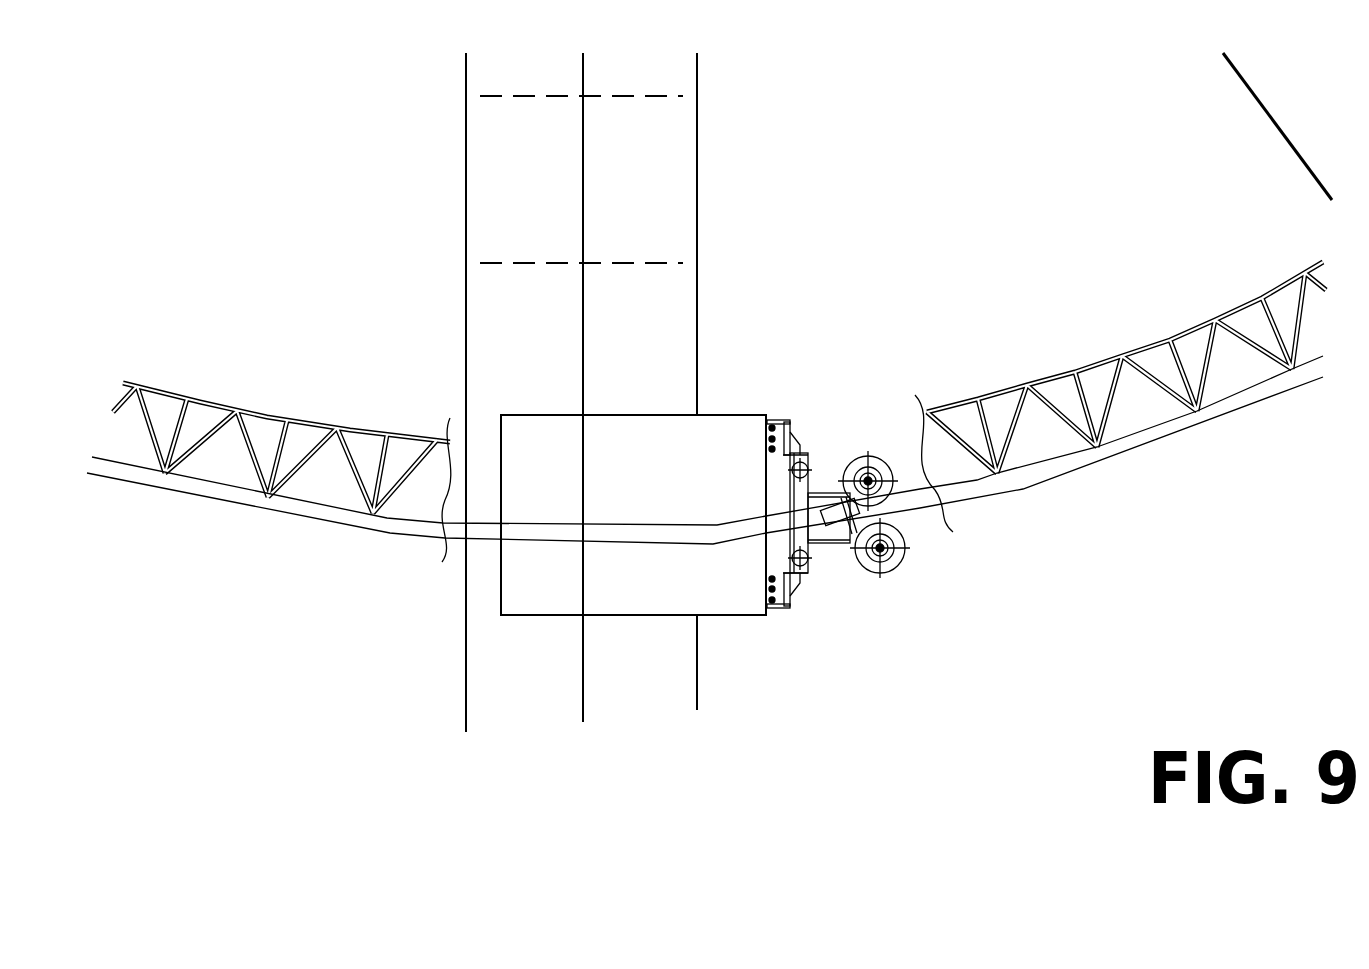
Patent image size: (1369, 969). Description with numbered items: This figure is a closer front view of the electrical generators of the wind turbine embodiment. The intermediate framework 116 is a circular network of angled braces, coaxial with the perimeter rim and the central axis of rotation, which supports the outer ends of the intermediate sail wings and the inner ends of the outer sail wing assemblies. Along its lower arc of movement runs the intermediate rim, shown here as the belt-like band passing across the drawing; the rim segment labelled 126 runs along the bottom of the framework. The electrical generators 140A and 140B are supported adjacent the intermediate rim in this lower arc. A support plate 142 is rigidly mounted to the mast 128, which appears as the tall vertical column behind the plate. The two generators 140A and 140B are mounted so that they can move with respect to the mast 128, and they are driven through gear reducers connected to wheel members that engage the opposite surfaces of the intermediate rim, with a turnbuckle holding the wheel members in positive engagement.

The intermediate framework 116 is at (1245, 298).
The conveyor belt 126 is at (1187, 433).
The mast 128 is at (680, 289).
The electrical generator 140A is at (855, 460).
The electrical generator 140B is at (905, 555).
The support plate 142 is at (723, 425).